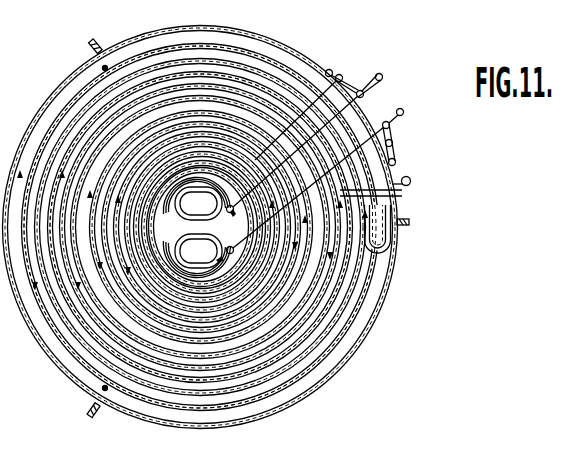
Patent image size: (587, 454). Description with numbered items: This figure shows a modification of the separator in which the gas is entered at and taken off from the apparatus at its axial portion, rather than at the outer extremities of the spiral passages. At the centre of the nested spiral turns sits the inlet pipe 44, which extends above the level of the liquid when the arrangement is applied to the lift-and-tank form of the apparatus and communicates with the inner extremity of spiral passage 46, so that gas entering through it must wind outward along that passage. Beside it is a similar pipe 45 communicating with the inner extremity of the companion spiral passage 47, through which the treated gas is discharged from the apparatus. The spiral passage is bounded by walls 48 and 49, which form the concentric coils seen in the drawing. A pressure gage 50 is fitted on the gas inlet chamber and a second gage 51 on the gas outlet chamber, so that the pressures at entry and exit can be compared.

The inlet pipe 44 is at (230, 214).
The similar pipe 45 is at (225, 260).
The spiral passage 46 is at (276, 128).
The spiral passage 47 is at (262, 124).
The wall of the spiral passage 48 is at (395, 190).
The wall of the spiral passage 49 is at (260, 258).
The pressure gage 50 is at (381, 76).
The gage 51 is at (404, 112).